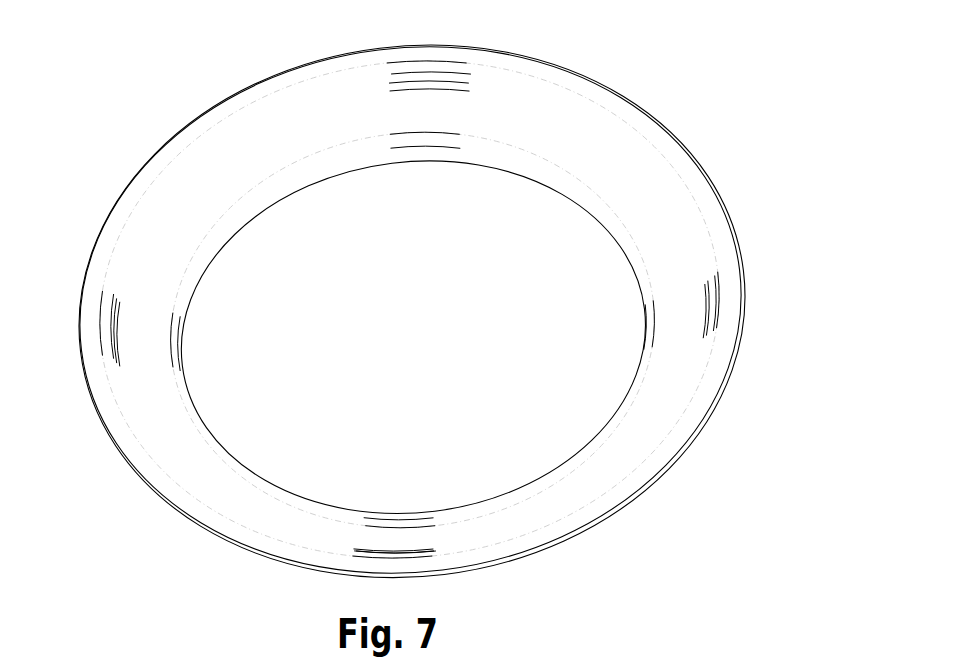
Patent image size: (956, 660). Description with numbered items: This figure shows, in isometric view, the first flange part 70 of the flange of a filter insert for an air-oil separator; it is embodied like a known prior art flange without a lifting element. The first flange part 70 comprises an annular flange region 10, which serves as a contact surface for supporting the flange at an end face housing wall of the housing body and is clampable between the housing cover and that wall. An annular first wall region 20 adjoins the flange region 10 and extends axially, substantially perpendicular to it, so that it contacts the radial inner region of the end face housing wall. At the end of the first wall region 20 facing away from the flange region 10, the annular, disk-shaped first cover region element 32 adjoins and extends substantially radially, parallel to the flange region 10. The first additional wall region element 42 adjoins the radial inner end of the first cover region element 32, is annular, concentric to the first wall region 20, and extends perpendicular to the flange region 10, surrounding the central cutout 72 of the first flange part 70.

The flange region 10 is at (732, 320).
The first wall region 20 is at (478, 535).
The first cover region element 32 is at (436, 121).
The first additional wall region element 42 is at (231, 220).
The first flange part 70 is at (127, 114).
The central cutout 72 is at (459, 295).